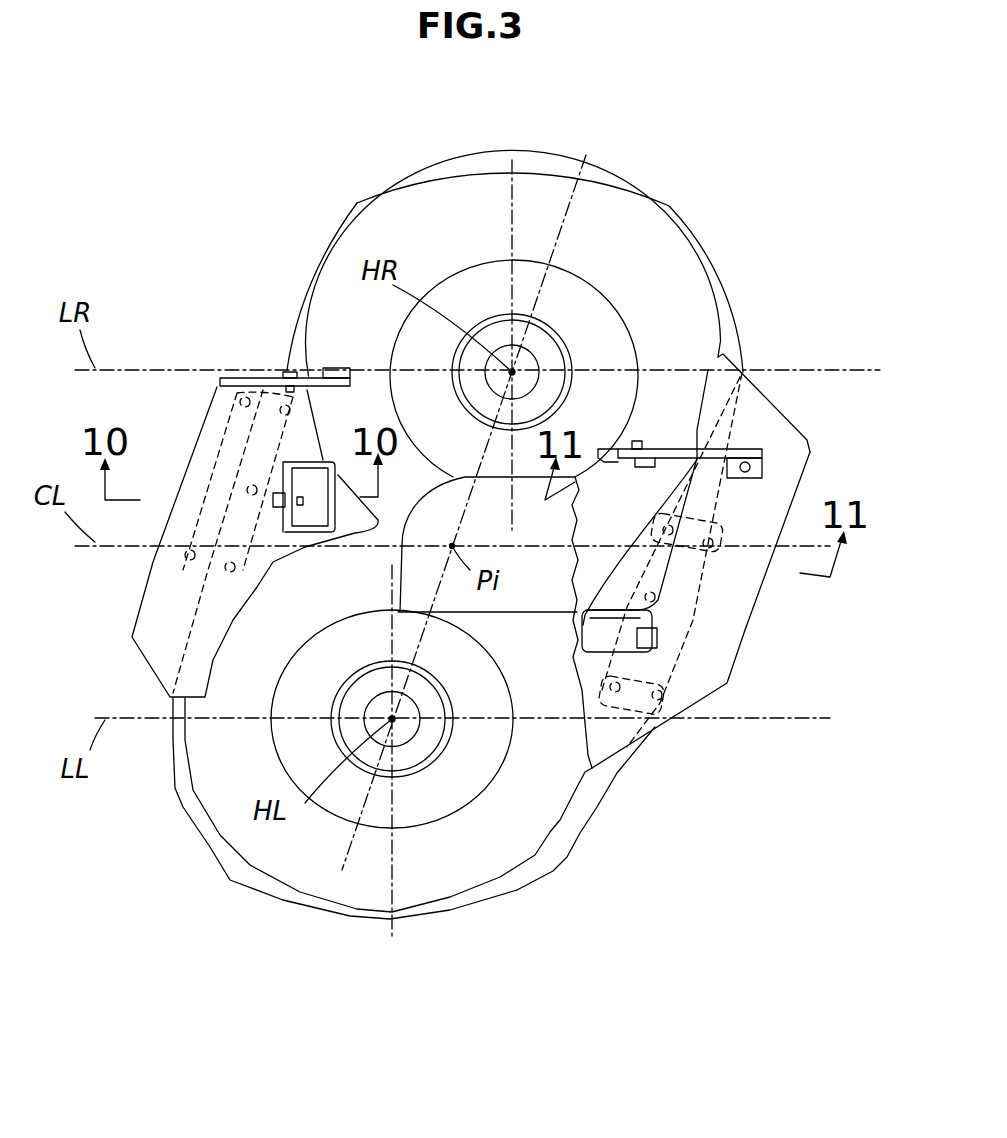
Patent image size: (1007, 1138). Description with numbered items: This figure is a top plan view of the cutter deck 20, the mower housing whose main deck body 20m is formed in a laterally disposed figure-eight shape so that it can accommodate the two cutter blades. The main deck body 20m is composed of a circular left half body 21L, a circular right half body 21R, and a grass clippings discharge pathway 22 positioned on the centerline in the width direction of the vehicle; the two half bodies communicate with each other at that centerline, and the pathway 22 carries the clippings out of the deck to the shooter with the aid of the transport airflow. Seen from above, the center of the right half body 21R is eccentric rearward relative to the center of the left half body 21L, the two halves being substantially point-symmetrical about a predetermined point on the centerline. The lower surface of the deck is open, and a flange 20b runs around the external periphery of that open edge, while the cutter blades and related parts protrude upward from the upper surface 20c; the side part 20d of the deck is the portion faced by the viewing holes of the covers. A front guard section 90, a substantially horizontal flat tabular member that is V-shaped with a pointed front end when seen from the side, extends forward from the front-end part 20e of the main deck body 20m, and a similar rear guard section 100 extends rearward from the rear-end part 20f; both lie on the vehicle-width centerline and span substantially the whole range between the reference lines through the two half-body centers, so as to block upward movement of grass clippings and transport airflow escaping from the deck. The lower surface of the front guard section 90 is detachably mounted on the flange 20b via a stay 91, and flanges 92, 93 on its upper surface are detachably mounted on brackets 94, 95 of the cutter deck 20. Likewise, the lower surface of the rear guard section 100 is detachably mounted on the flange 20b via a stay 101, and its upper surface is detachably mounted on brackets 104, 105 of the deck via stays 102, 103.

The cutter deck 20 is at (197, 176).
The flange 20b is at (415, 199).
The upper surface 20c is at (543, 199).
The side part 20d is at (617, 205).
The front-end part 20e is at (250, 432).
The rear-end part 20f is at (748, 473).
The main deck body 20m is at (668, 308).
The right half body 21R is at (359, 250).
The left half body 21L is at (239, 852).
The grass clippings discharge pathway 22 is at (540, 600).
The front guard section 90 is at (145, 622).
The stay 91 is at (210, 470).
The flange 92 is at (262, 517).
The flange 93 is at (230, 378).
The bracket 94 is at (302, 540).
The bracket 95 is at (307, 370).
The rear guard section 100 is at (748, 608).
The stay 101 is at (693, 630).
The stay 102 is at (745, 448).
The stay 103 is at (655, 657).
The bracket 104 is at (630, 470).
The bracket 105 is at (610, 653).